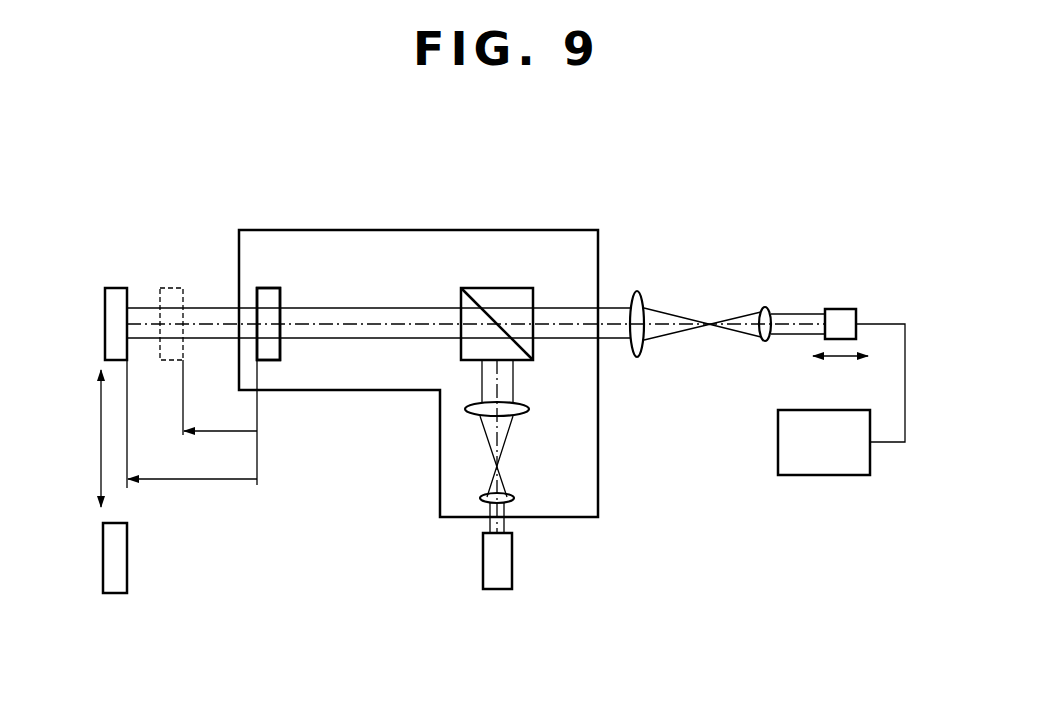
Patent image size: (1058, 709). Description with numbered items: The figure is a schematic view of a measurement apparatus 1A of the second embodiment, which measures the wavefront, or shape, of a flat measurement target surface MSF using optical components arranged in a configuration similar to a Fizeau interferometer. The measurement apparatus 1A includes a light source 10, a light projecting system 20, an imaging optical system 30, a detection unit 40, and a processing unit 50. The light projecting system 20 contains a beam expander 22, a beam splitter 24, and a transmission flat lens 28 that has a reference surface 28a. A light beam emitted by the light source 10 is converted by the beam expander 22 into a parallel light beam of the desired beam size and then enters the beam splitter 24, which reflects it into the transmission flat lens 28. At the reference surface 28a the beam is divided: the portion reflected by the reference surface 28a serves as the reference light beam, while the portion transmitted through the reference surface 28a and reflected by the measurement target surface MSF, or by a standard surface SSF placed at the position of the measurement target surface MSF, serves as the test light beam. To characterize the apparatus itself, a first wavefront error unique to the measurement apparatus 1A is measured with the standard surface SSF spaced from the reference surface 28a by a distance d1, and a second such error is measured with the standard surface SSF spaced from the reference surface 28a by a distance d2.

The measurement apparatus 1A is at (558, 181).
The light source 10 is at (512, 566).
The light projecting system 20 is at (347, 391).
The beam expander 22 is at (535, 405).
The beam splitter 24 is at (496, 288).
The transmission flat lens 28 is at (280, 298).
The reference surface 28a is at (265, 288).
The imaging optical system 30 is at (765, 283).
The detection unit 40 is at (839, 309).
The processing unit 50 is at (830, 476).
The measurement target surface MSF is at (111, 288).
The standard surface SSF is at (127, 533).
The distance d1 is at (192, 466).
The distance d2 is at (220, 418).